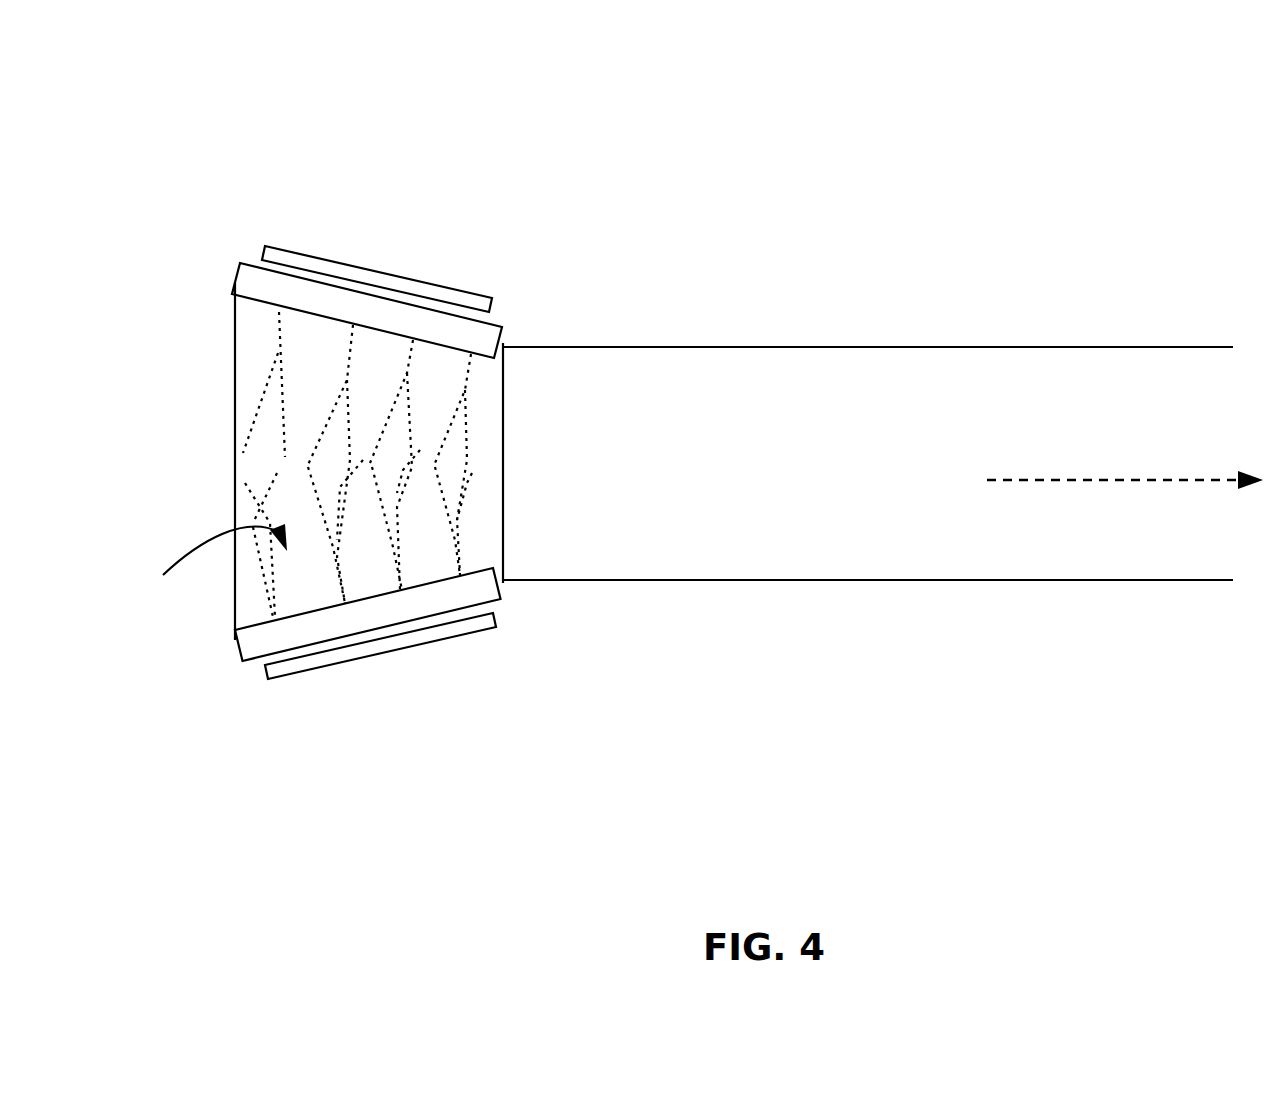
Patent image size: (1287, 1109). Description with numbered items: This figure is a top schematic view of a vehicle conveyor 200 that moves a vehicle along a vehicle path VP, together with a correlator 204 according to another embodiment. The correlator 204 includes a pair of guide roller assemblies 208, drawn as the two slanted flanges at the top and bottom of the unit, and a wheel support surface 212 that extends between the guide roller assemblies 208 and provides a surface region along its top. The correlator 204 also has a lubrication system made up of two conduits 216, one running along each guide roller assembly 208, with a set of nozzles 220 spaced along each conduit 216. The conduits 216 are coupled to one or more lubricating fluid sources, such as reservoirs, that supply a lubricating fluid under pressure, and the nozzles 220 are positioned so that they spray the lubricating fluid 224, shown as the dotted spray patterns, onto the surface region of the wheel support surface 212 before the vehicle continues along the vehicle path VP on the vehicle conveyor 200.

The vehicle conveyor 200 is at (718, 238).
The correlator 204 is at (311, 170).
The guide roller assemblies 208 is at (248, 283).
The wheel support surface 212 is at (255, 482).
The conduits 216 is at (412, 290).
The nozzles 220 is at (293, 273).
The lubricating fluid 224 is at (273, 385).
The vehicle path VP is at (1187, 482).